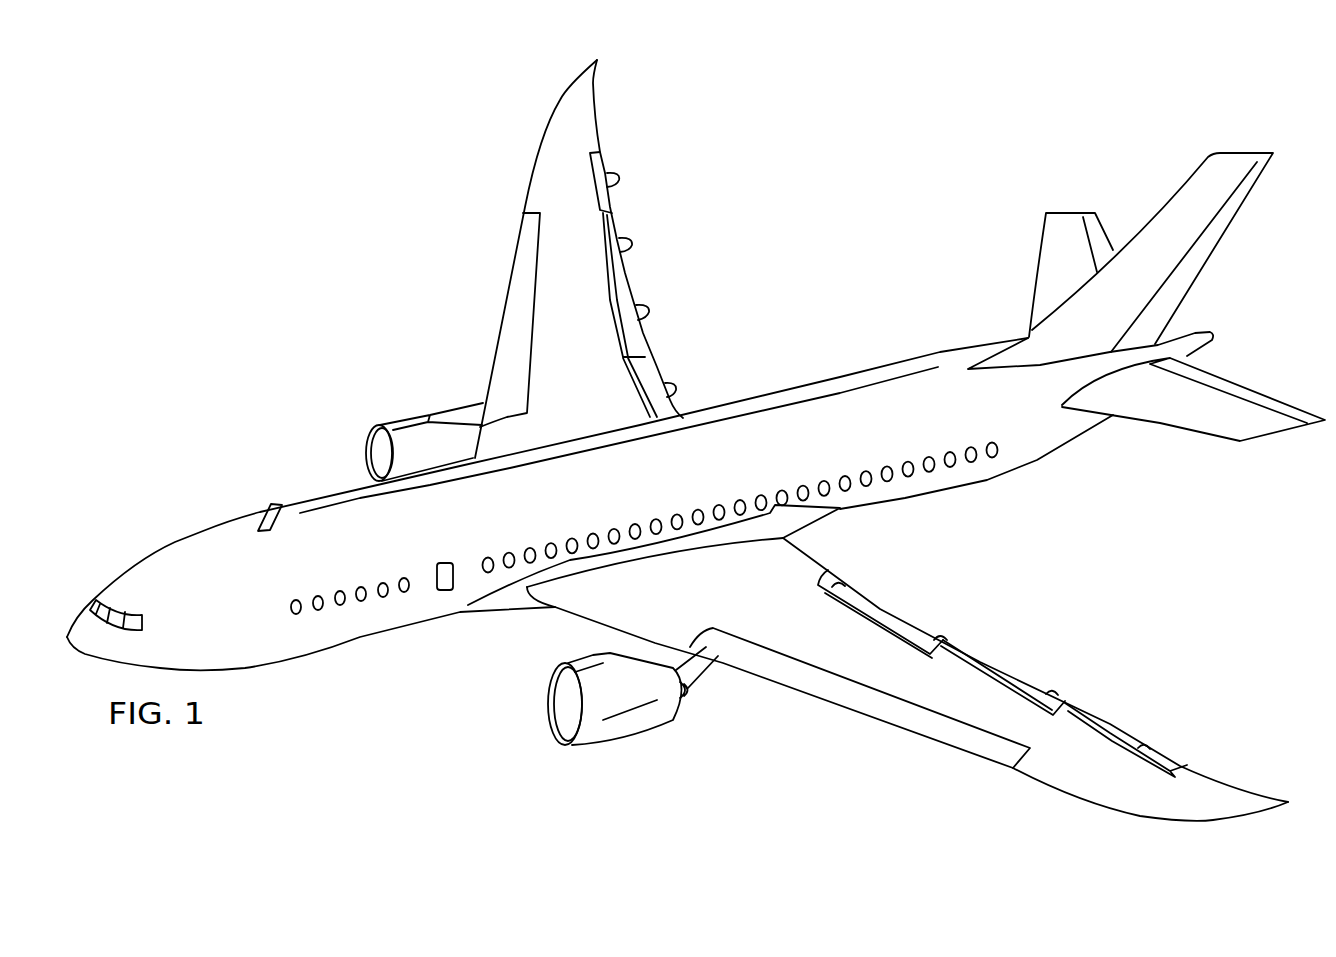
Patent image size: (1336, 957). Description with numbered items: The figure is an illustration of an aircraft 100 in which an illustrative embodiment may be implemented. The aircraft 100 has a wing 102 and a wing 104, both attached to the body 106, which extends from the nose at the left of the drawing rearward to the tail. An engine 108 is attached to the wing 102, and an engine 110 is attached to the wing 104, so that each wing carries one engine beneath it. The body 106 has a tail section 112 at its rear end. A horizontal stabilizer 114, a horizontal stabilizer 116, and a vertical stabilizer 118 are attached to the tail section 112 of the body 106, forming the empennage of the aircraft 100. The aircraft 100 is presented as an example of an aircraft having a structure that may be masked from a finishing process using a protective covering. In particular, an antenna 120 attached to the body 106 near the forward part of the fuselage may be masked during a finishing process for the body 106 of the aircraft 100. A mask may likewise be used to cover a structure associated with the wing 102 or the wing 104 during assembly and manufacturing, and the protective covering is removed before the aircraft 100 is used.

The aircraft 100 is at (352, 313).
The wing 102 is at (594, 97).
The wing 104 is at (1143, 815).
The body 106 is at (207, 530).
The engine 108 is at (405, 413).
The engine 110 is at (632, 742).
The tail section 112 is at (1100, 477).
The horizontal stabilizer 114 is at (1040, 268).
The horizontal stabilizer 116 is at (1193, 433).
The vertical stabilizer 118 is at (1223, 240).
The antenna 120 is at (277, 503).